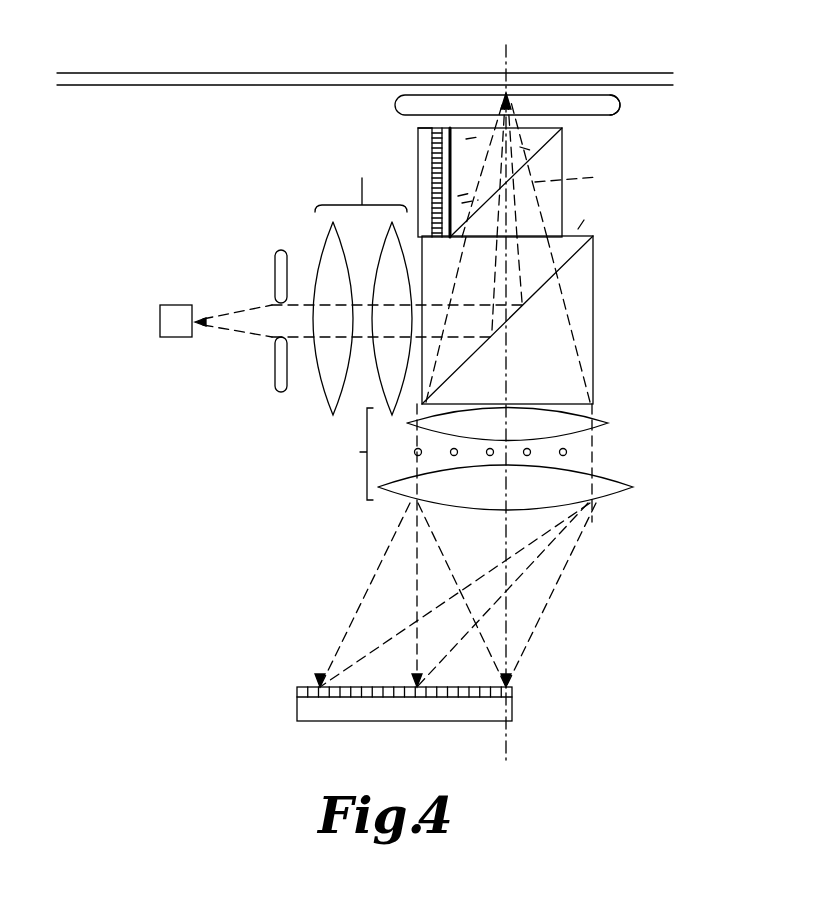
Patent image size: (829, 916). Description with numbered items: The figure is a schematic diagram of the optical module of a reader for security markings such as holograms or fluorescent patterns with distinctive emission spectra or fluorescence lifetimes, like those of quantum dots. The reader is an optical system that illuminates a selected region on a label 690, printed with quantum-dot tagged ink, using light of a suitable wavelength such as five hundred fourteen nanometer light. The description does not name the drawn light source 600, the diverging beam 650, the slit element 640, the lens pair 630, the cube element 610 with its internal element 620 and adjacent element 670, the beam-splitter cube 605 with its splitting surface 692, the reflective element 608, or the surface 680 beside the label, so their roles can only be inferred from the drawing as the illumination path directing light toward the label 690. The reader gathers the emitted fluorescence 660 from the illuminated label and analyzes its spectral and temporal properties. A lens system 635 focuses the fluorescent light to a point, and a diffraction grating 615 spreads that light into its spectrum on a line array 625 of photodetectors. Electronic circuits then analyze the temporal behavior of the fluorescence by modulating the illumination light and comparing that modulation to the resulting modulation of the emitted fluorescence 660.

The light source 600 is at (160, 321).
The beam splitter cube 605 is at (593, 260).
The reflective element 608 is at (621, 105).
The second beam splitter cube 610 is at (562, 145).
The diffraction grating 615 is at (567, 452).
The grating / reticle 620 is at (436, 148).
The line array of photodetectors 625 is at (297, 708).
The collimating lens pair 630 is at (362, 282).
The lens system 635 is at (360, 452).
The slit aperture 640 is at (273, 278).
The diverging light beam 650 is at (224, 330).
The emitted fluorescence 660 is at (588, 215).
The aperture plate 670 is at (410, 127).
The object surface 680 is at (243, 73).
The label 690 is at (447, 84).
The beam splitting surface 692 is at (510, 318).